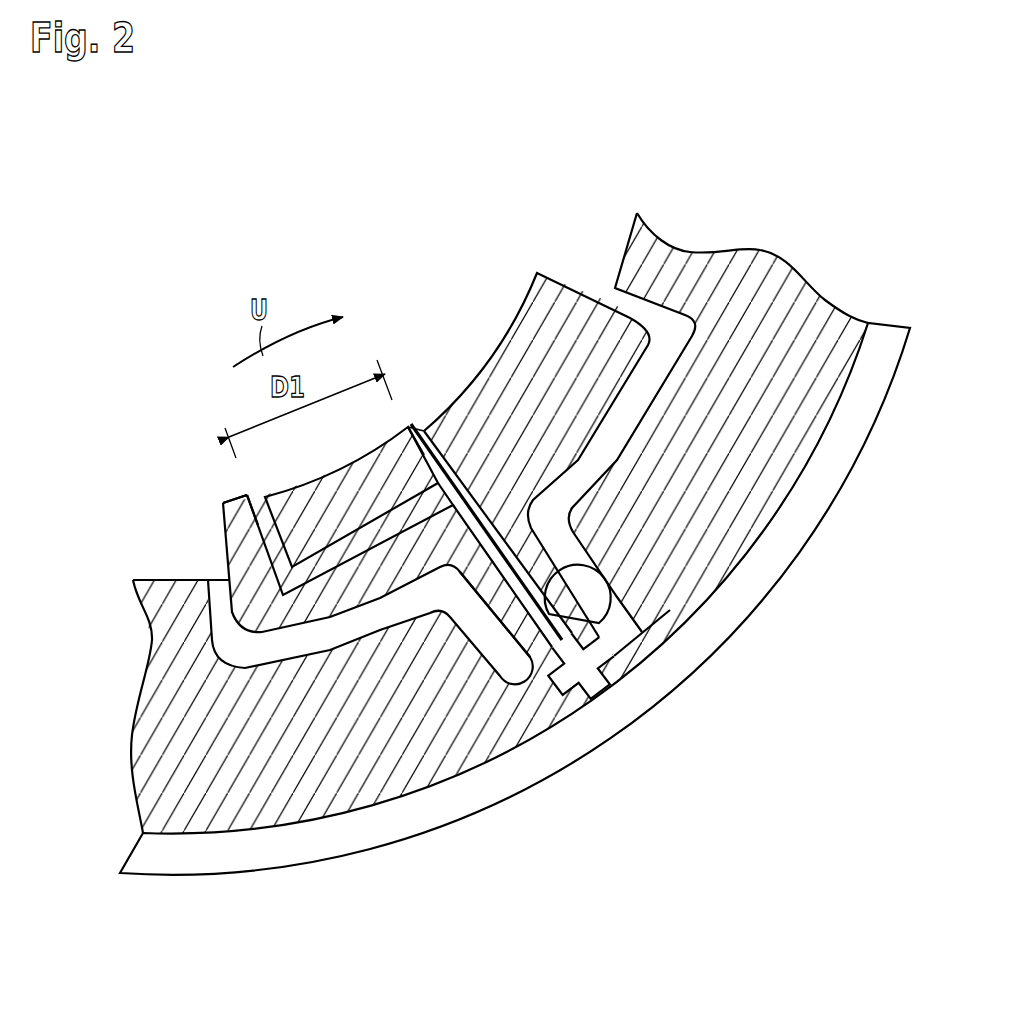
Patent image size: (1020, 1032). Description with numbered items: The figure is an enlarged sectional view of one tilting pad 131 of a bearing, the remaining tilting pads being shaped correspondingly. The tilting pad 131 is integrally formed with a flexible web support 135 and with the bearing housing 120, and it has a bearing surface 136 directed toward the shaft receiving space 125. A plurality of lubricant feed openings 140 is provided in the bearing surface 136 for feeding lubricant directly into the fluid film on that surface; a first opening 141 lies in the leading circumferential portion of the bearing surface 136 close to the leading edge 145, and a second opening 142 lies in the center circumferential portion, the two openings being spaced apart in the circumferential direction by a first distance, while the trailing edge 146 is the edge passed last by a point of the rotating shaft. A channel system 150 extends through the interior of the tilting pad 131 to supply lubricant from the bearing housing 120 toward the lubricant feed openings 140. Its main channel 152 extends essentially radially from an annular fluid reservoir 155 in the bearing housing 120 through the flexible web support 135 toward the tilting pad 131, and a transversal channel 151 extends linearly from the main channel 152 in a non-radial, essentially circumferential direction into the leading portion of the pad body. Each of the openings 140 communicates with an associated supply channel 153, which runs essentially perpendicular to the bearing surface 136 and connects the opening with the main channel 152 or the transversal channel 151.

The bearing housing 120 is at (690, 532).
The shaft receiving space 125 is at (280, 280).
The tilting pad 131 is at (557, 333).
The flexible web support 135 is at (660, 650).
The bearing surface 136 is at (343, 462).
The lubricant feed openings 140 is at (244, 494).
The first opening 141 is at (234, 484).
The second opening 142 is at (409, 424).
The leading edge 145 is at (226, 503).
The trailing edge 146 is at (537, 272).
The channel system 150 is at (420, 428).
The transversal channel 151 is at (352, 545).
The main channel 152 is at (593, 600).
The supply channel 153 is at (268, 540).
The annular fluid reservoir 155 is at (534, 738).